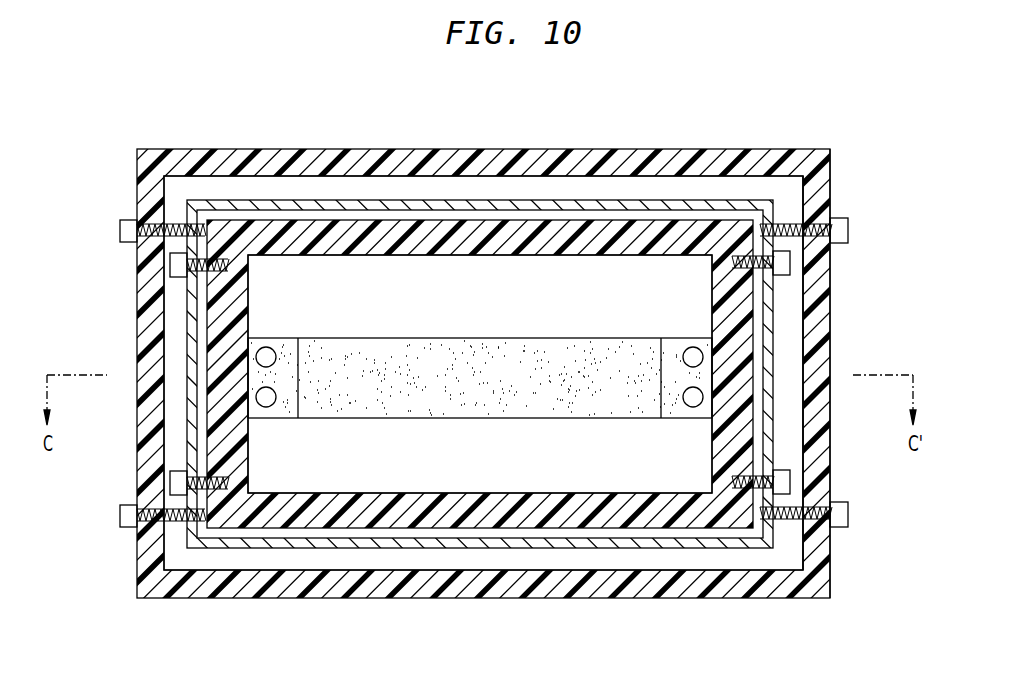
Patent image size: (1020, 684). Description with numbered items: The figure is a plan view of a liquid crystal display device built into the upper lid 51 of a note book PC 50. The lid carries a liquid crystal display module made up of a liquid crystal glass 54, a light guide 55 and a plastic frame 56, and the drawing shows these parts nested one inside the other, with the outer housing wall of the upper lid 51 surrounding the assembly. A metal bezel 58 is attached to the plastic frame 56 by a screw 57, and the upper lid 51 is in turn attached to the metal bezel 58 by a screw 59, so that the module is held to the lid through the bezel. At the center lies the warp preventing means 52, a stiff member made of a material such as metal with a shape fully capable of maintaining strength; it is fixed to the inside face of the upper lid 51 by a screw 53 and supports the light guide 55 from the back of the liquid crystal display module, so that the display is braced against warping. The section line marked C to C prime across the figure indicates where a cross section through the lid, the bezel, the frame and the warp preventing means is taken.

The note book PC 50 is at (666, 102).
The upper lid 51 is at (772, 585).
The warp preventing means 52 is at (475, 348).
The screw 53 is at (690, 350).
The liquid crystal glass 54 is at (528, 558).
The light guide 55 is at (425, 480).
The plastic frame 56 is at (615, 518).
The screw 57 is at (820, 298).
The metal bezel 58 is at (690, 548).
The screw 59 is at (840, 233).